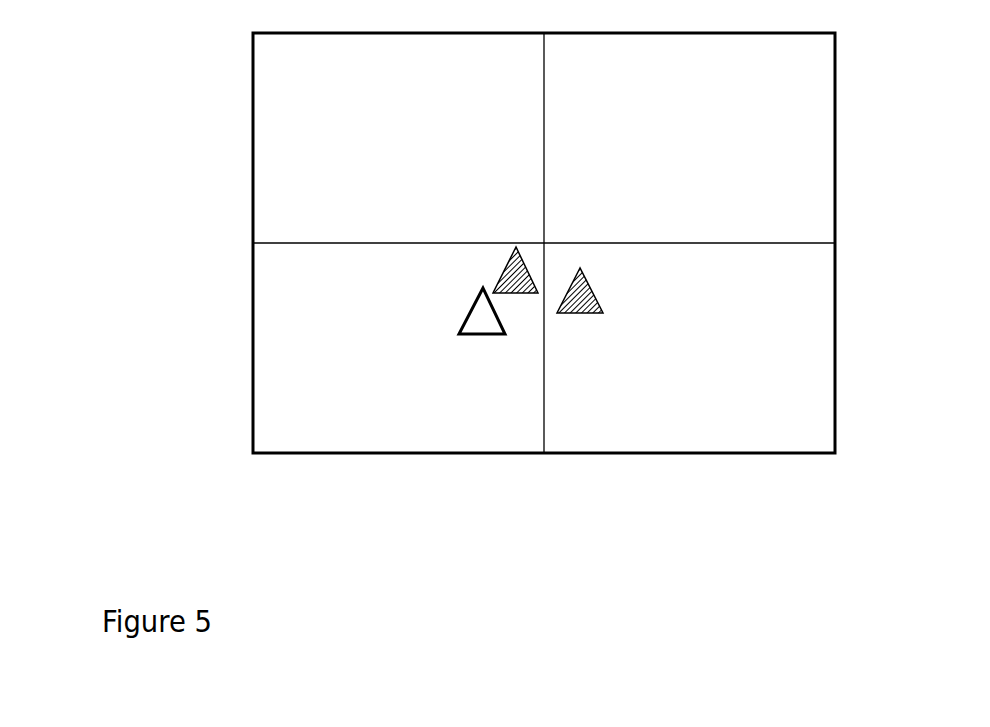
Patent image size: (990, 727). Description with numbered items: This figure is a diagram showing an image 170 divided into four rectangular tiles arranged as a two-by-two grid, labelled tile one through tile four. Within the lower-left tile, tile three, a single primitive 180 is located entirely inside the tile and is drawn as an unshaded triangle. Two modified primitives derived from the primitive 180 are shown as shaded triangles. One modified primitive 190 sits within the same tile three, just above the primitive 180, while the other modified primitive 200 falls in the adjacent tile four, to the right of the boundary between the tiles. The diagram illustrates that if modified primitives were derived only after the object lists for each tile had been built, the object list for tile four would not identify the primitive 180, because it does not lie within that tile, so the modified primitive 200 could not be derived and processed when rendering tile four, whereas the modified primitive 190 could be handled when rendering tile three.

The image 170 is at (838, 127).
The primitive 180 is at (467, 315).
The modified primitive 190 is at (500, 268).
The modified primitive 200 is at (583, 317).